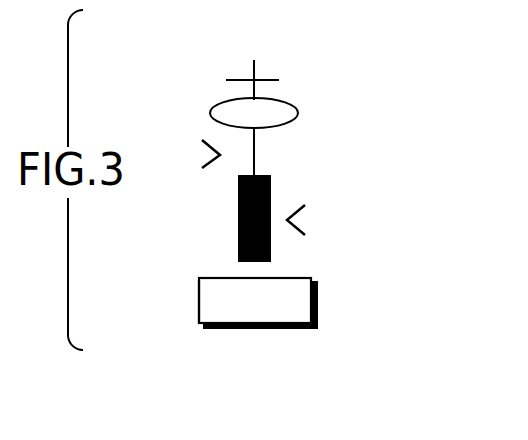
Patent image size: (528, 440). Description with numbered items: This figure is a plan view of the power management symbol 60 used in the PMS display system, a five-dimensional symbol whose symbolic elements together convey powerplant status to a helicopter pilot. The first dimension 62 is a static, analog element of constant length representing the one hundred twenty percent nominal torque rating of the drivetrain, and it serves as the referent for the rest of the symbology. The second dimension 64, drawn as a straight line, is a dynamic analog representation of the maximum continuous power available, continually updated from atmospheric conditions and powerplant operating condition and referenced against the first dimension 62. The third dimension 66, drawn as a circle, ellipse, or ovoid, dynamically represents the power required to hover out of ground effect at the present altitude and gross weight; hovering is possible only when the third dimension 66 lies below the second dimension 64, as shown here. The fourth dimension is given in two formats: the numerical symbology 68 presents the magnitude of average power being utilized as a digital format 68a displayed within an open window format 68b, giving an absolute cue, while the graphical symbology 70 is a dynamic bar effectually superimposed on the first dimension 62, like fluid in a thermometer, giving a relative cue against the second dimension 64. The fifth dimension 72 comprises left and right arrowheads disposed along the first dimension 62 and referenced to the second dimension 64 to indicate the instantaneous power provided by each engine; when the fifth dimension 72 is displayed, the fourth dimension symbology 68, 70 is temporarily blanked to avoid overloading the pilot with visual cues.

The power management symbol 60 is at (362, 162).
The first dimension 62 is at (259, 153).
The second dimension 64 is at (273, 70).
The third dimension 66 is at (209, 112).
The numerical symbology of the fourth dimension 68 is at (319, 293).
The digital format 68a is at (239, 313).
The open window format 68b is at (199, 286).
The graphical symbology of the fourth dimension 70 is at (236, 207).
The fifth dimension 72 is at (203, 155).